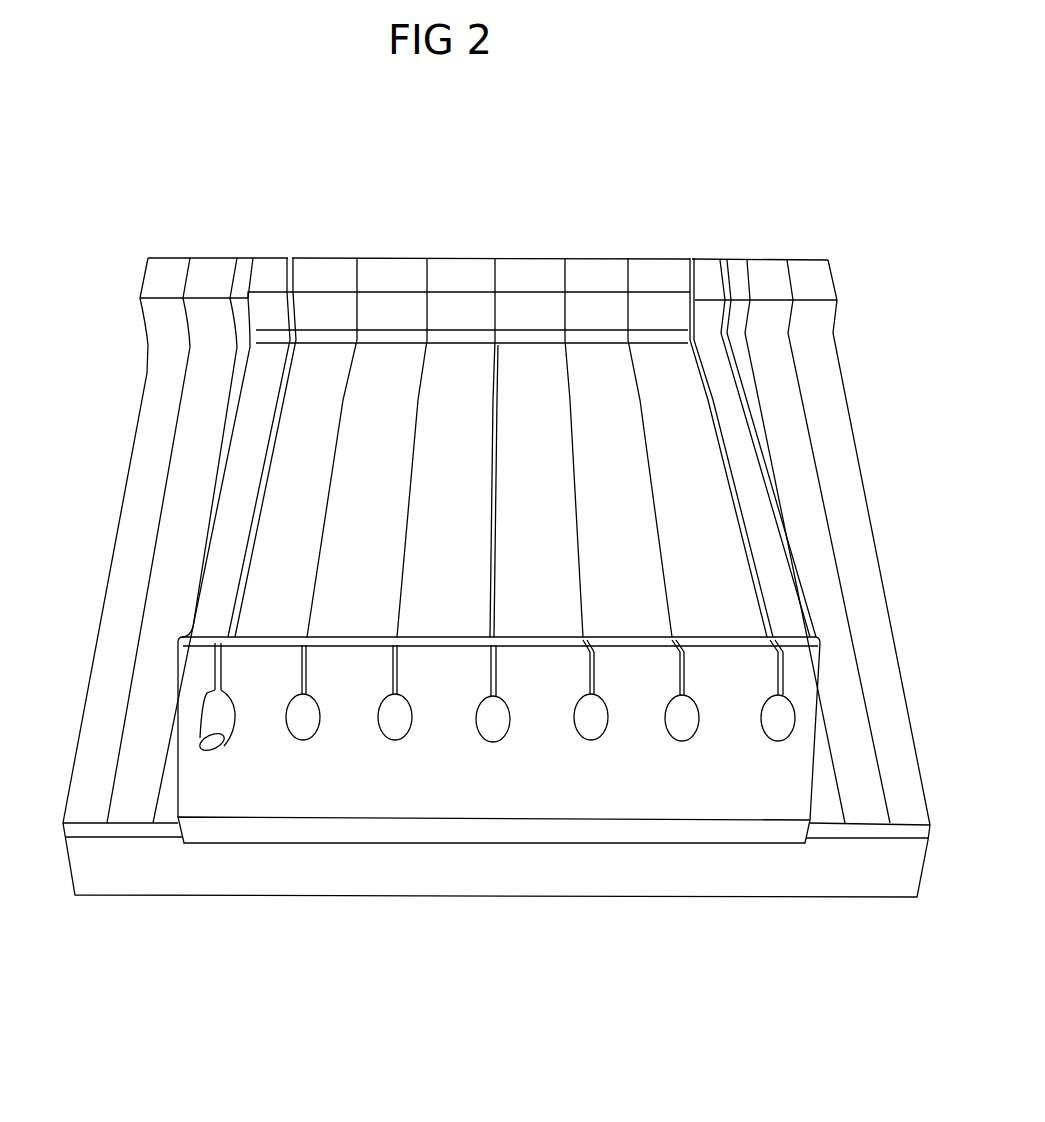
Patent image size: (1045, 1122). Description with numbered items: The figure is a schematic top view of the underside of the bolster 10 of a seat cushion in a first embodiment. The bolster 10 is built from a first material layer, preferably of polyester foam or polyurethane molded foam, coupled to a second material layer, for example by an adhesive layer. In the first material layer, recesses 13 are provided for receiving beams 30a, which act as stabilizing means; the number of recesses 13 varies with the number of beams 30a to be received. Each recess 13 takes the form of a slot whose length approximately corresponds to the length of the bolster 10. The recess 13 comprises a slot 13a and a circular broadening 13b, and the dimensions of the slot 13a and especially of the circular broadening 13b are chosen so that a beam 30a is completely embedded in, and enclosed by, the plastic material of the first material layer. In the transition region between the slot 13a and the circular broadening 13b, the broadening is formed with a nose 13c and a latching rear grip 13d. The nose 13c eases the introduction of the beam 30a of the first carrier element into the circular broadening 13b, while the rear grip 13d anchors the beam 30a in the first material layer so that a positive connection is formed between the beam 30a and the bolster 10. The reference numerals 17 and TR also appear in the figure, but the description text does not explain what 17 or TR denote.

The bolster 10 is at (496, 643).
The base plate 17 is at (355, 883).
The tray portion TR is at (563, 830).
The recess 13 is at (406, 535).
The slot 13a is at (243, 558).
The circular broadening 13b is at (198, 700).
The nose 13c is at (387, 700).
The rear grip 13d is at (398, 690).
The beam 30a is at (156, 725).